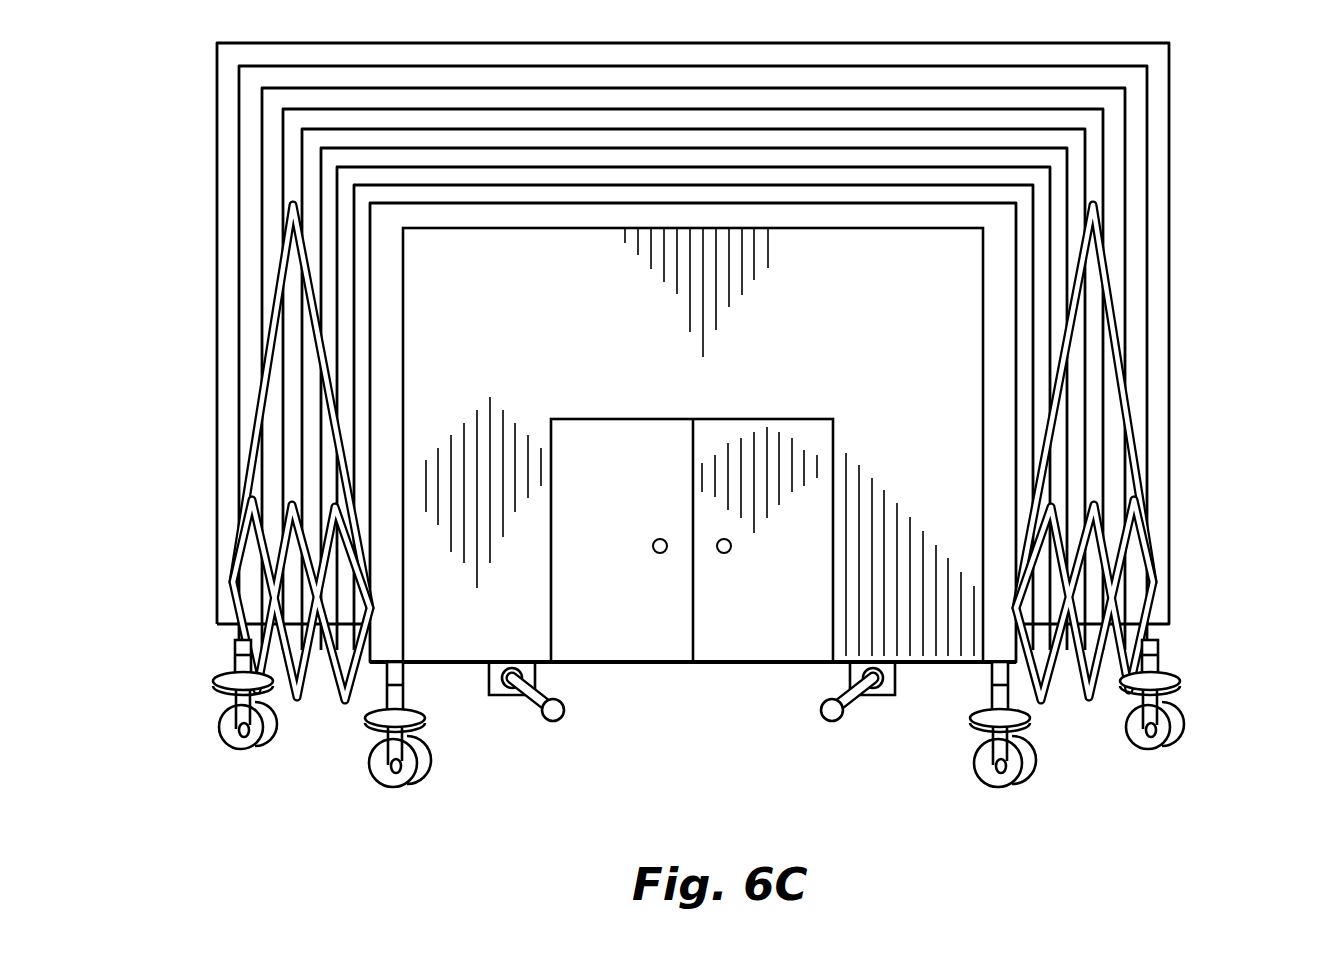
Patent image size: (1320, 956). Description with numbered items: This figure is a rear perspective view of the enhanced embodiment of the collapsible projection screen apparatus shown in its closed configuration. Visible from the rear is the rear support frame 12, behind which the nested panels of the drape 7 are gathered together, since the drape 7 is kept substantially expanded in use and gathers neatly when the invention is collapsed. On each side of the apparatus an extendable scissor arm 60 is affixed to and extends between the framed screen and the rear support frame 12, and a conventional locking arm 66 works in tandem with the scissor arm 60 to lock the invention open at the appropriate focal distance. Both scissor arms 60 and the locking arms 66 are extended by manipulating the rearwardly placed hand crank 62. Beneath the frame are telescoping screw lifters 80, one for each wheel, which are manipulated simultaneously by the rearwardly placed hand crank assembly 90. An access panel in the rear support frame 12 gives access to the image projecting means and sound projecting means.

The drape 7 is at (293, 137).
The rear support frame 12 is at (388, 297).
The scissor arm 60 is at (229, 576).
The hand crank 62 is at (503, 703).
The locking arm 66 is at (259, 388).
The telescoping screw lifter 80 is at (216, 648).
The hand crank assembly 90 is at (872, 704).